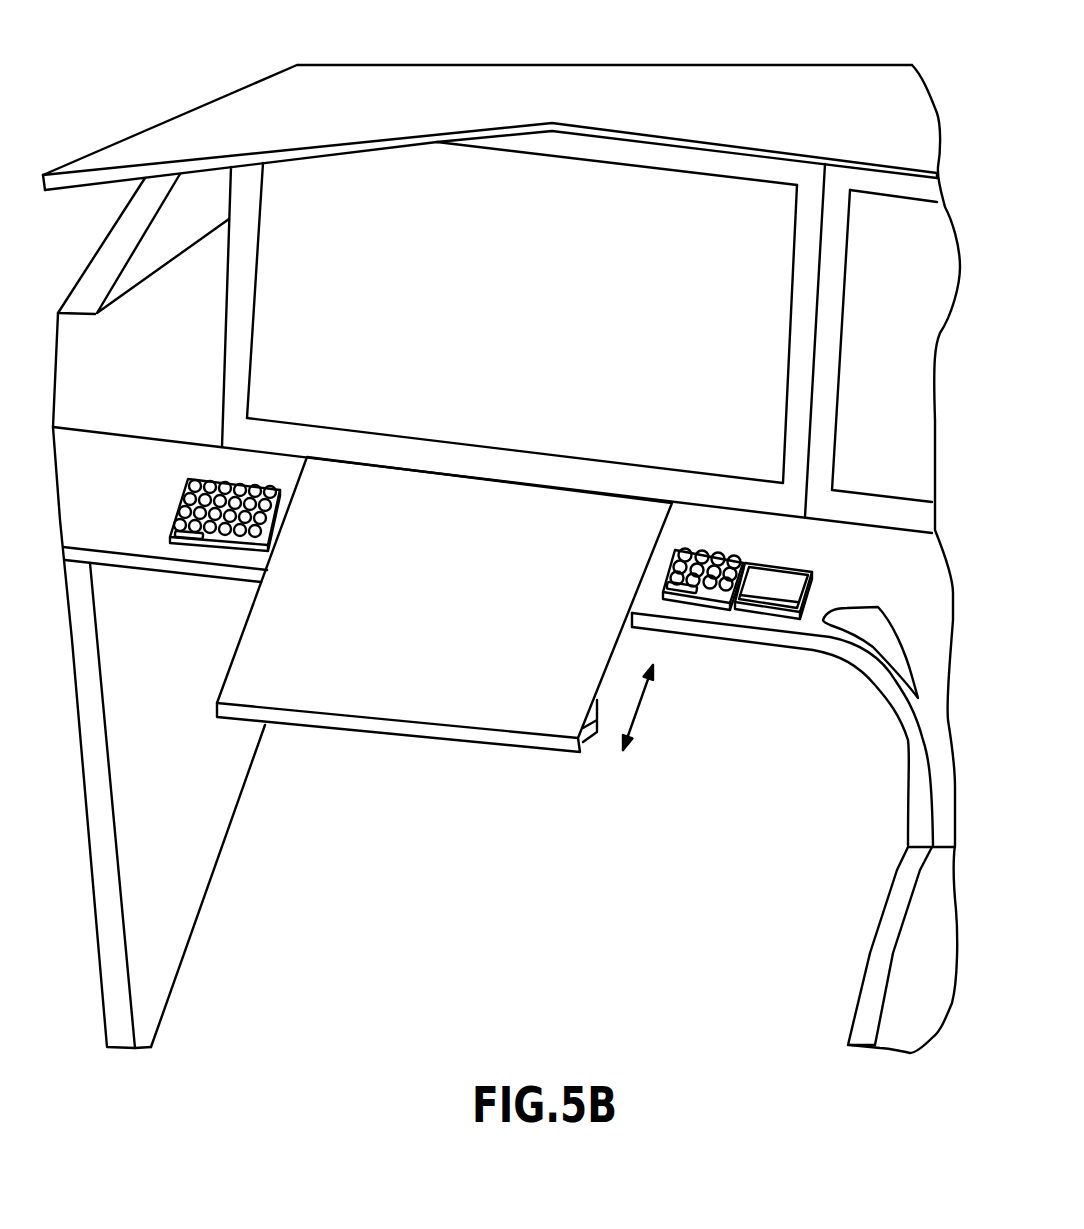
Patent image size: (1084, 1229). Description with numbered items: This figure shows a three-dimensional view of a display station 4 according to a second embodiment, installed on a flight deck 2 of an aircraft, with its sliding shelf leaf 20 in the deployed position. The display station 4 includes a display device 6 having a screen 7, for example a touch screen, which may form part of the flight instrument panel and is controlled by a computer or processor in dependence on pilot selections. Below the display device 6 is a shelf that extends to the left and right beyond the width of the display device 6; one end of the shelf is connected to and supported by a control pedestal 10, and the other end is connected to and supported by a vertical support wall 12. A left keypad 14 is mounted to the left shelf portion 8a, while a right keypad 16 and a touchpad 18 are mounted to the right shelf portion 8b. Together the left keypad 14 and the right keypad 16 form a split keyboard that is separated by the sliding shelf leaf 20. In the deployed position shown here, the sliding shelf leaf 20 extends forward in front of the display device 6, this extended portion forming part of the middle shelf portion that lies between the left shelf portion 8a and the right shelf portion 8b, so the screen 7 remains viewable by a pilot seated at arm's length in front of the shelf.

The flight deck 2 is at (788, 32).
The display station 4 is at (155, 405).
The display device 6 is at (228, 322).
The screen 7 is at (268, 392).
The left shelf portion 8a is at (147, 521).
The right shelf portion 8b is at (813, 550).
The control pedestal 10 is at (865, 990).
The vertical support wall 12 is at (237, 772).
The left keypad 14 is at (210, 548).
The right keypad 16 is at (695, 603).
The touchpad 18 is at (762, 613).
The sliding shelf leaf 20 is at (425, 768).